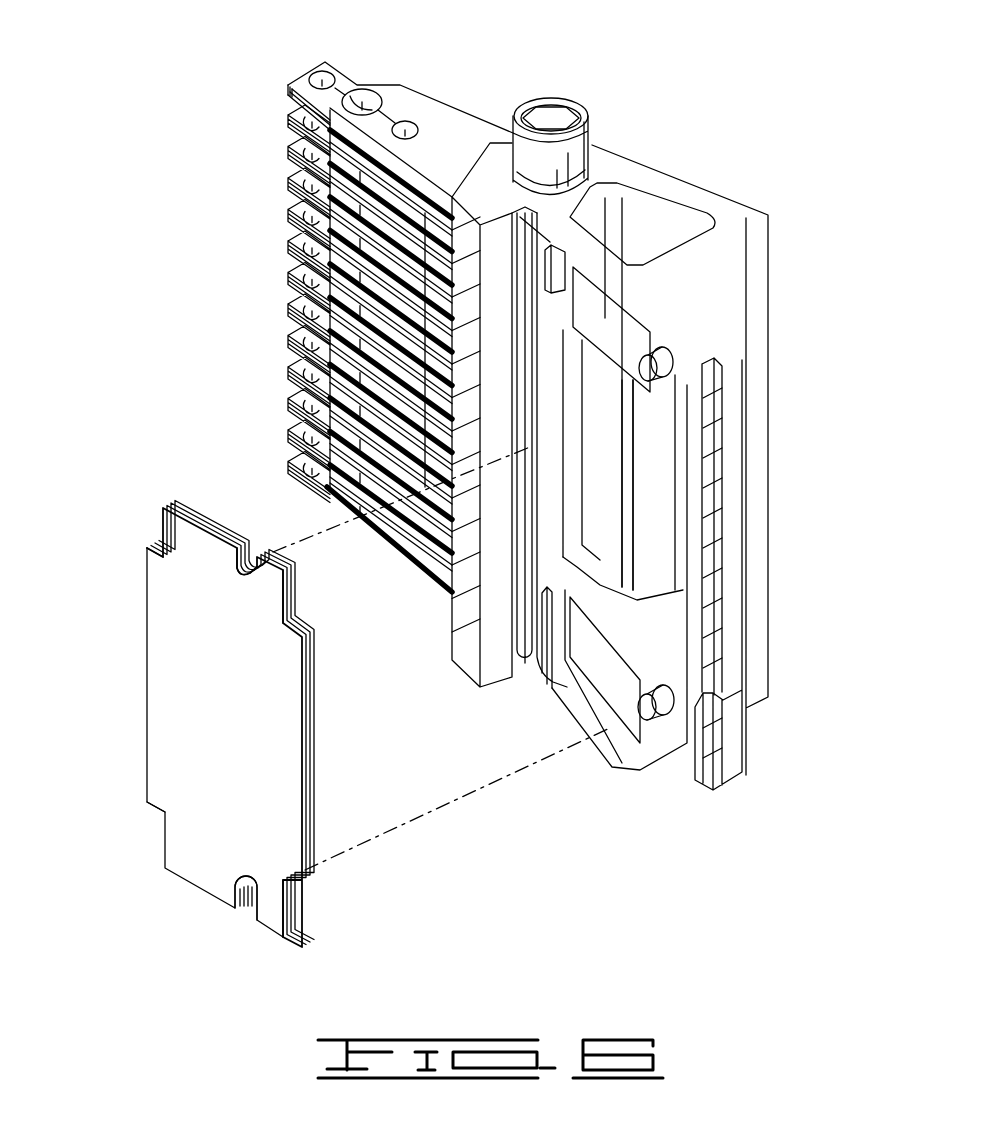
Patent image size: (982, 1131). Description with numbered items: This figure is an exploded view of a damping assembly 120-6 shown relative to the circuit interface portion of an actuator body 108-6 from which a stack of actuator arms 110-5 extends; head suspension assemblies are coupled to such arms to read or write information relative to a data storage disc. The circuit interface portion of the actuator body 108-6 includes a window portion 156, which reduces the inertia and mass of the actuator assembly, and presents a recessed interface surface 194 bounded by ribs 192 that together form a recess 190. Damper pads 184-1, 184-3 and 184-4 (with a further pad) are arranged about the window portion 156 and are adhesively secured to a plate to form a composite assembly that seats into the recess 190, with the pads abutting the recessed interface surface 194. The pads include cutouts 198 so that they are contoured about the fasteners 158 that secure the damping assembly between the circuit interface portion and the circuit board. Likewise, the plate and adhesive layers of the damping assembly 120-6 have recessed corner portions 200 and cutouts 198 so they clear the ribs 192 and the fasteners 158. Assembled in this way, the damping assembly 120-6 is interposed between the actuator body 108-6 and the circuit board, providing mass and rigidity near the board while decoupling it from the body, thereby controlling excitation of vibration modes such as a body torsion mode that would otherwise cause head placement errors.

The actuator body 108-6 is at (722, 219).
The actuator arm 110-5 is at (415, 100).
The damping assembly 120-6 is at (188, 513).
The window portion 156 is at (636, 530).
The fasteners 158 is at (690, 362).
The damper pad 184-1 is at (608, 328).
The damper pad 184-3 is at (620, 670).
The damper pad 184-4 is at (553, 468).
The recess 190 is at (622, 265).
The ribs 192 is at (553, 243).
The recessed interface surface 194 is at (703, 256).
The cutouts 198 is at (266, 550).
The recessed corner portions 200 is at (155, 530).